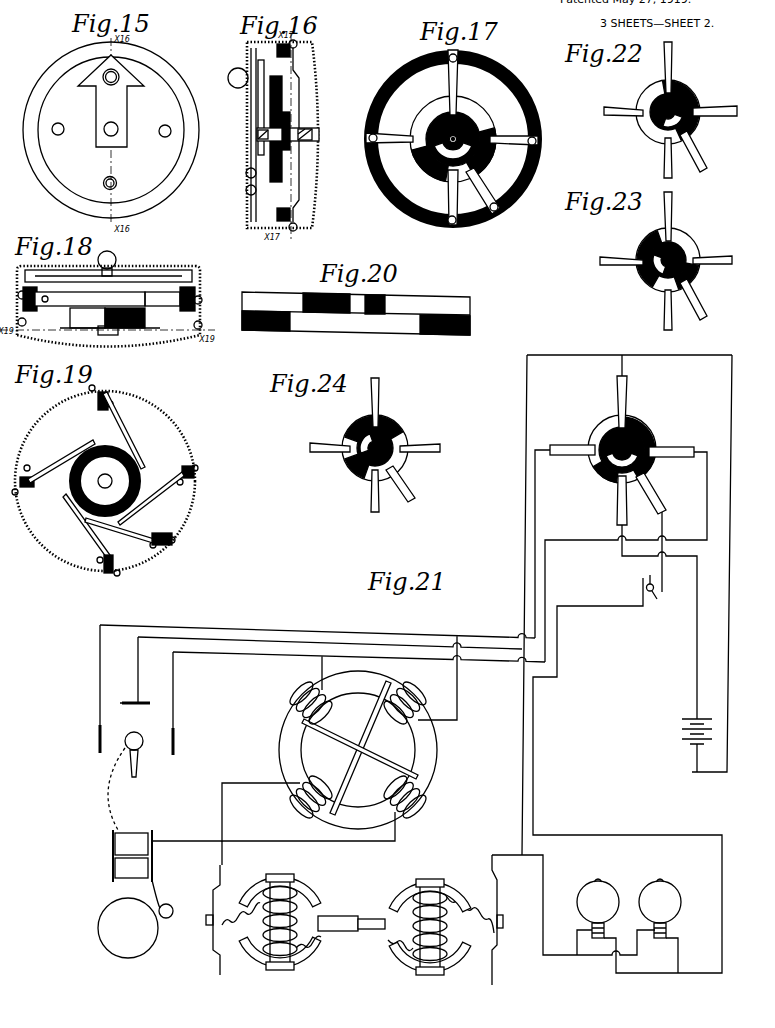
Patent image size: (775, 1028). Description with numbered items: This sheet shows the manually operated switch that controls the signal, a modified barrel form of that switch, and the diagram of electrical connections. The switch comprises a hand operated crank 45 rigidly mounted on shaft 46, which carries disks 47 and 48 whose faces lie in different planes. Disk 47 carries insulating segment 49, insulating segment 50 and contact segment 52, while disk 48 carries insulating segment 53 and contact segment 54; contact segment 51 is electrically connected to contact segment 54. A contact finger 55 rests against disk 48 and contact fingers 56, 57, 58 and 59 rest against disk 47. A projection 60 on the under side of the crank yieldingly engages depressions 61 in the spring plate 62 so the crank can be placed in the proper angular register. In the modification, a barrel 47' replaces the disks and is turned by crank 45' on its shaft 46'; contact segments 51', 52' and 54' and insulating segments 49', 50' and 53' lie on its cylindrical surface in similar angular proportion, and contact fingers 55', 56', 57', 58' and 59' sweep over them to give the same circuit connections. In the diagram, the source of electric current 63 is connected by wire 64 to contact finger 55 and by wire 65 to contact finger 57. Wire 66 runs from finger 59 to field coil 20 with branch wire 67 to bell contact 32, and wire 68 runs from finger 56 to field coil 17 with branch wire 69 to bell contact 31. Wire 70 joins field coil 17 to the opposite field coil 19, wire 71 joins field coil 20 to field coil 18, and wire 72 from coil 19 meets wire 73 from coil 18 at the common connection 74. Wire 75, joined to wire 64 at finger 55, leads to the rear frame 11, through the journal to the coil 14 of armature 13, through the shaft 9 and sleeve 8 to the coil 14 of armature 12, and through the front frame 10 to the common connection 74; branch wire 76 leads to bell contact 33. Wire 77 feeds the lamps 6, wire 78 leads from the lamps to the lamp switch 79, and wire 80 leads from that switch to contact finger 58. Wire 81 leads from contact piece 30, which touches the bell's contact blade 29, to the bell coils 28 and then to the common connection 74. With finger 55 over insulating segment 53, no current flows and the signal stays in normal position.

In FIG. 21, the lamps 6 is at (629, 908).
In FIG. 21, the sleeve 8 is at (345, 916).
In FIG. 21, the shaft 9 is at (370, 929).
In FIG. 21, the front frame 10 is at (210, 908).
In FIG. 21, the rear frame 11 is at (497, 908).
In FIG. 21, the armature 12 is at (296, 905).
In FIG. 21, the armature 13 is at (447, 936).
In FIG. 21, the coil 14 is at (258, 928).
In FIG. 21, the field coil 17 is at (418, 688).
In FIG. 21, the field coil 18 is at (418, 814).
In FIG. 21, the field coil 19 is at (297, 817).
In FIG. 21, the field coil 20 is at (300, 689).
In FIG. 21, the coils of the bell 28 is at (115, 857).
In FIG. 21, the contact blade of bell 29 is at (138, 762).
In FIG. 21, the contact piece 30 is at (125, 741).
In FIG. 21, the bell contact 31 is at (100, 738).
In FIG. 21, the bell contact 32 is at (173, 738).
In FIG. 21, the bell contact 33 is at (138, 695).
In FIG. 15, the hand operated crank 45 is at (114, 101).
In FIG. 16, the hand operated crank 45 is at (246, 107).
In FIG. 18, the crank 45' is at (108, 266).
In FIG. 16, the shaft 46 is at (288, 145).
In FIG. 18, the shaft 46' is at (94, 332).
In FIG. 16, the disk 47 is at (277, 129).
In FIG. 17, the disk 47 is at (499, 115).
In FIG. 18, the barrel 47' is at (162, 308).
In FIG. 19, the barrel 47' is at (121, 481).
In FIG. 16, the disk 48 is at (290, 150).
In FIG. 17, the disk 48 is at (475, 110).
In FIG. 17, the insulating segment 49 is at (487, 152).
In FIG. 20, the insulating segment 49' is at (326, 296).
In FIG. 17, the insulating segment 50 is at (430, 171).
In FIG. 20, the insulating segment 50' is at (376, 297).
In FIG. 17, the contact segment 51 is at (466, 188).
In FIG. 22, the contact segment 51 is at (708, 99).
In FIG. 23, the contact segment 51 is at (623, 272).
In FIG. 24, the contact segment 51 is at (374, 420).
In FIG. 21, the contact segment 51 is at (635, 494).
In FIG. 20, the contact segment 51' is at (356, 303).
In FIG. 17, the contact segment 52 is at (417, 103).
In FIG. 22, the contact segment 52 is at (650, 130).
In FIG. 23, the contact segment 52 is at (686, 276).
In FIG. 24, the contact segment 52 is at (357, 466).
In FIG. 21, the contact segment 52 is at (601, 427).
In FIG. 18, the contact segment 52' is at (109, 299).
In FIG. 20, the contact segment 52' is at (347, 305).
In FIG. 17, the insulating segment 53 is at (473, 94).
In FIG. 21, the insulating segment 53 is at (642, 443).
In FIG. 18, the insulating segment 53' is at (110, 333).
In FIG. 20, the insulating segment 53' is at (356, 332).
In FIG. 17, the contact segment 54 is at (453, 141).
In FIG. 22, the contact segment 54 is at (674, 110).
In FIG. 23, the contact segment 54 is at (661, 259).
In FIG. 24, the contact segment 54 is at (375, 446).
In FIG. 21, the contact segment 54 is at (619, 455).
In FIG. 18, the contact segment 54' is at (107, 318).
In FIG. 20, the contact segment 54' is at (351, 322).
In FIG. 16, the contact finger 55 is at (304, 135).
In FIG. 17, the contact finger 55 is at (444, 82).
In FIG. 22, the contact finger 55 is at (678, 67).
In FIG. 23, the contact finger 55 is at (677, 216).
In FIG. 24, the contact finger 55 is at (384, 402).
In FIG. 21, the contact finger 55 is at (612, 402).
In FIG. 19, the contact finger 55' is at (127, 430).
In FIG. 17, the contact finger 56 is at (389, 145).
In FIG. 22, the contact finger 56 is at (623, 103).
In FIG. 23, the contact finger 56 is at (621, 253).
In FIG. 24, the contact finger 56 is at (330, 456).
In FIG. 21, the contact finger 56 is at (572, 441).
In FIG. 19, the contact finger 56' is at (57, 463).
In FIG. 16, the contact finger 57 is at (274, 207).
In FIG. 17, the contact finger 57 is at (444, 197).
In FIG. 22, the contact finger 57 is at (659, 158).
In FIG. 23, the contact finger 57 is at (659, 310).
In FIG. 24, the contact finger 57 is at (364, 491).
In FIG. 21, the contact finger 57 is at (613, 500).
In FIG. 19, the contact finger 57' is at (86, 533).
In FIG. 17, the contact finger 58 is at (483, 191).
In FIG. 22, the contact finger 58 is at (696, 151).
In FIG. 23, the contact finger 58 is at (696, 299).
In FIG. 24, the contact finger 58 is at (404, 484).
In FIG. 21, the contact finger 58 is at (652, 493).
In FIG. 19, the contact finger 58' is at (128, 533).
In FIG. 17, the contact finger 59 is at (514, 148).
In FIG. 22, the contact finger 59 is at (715, 118).
In FIG. 23, the contact finger 59 is at (712, 267).
In FIG. 24, the contact finger 59 is at (420, 440).
In FIG. 21, the contact finger 59 is at (671, 443).
In FIG. 19, the contact finger 59' is at (156, 495).
In FIG. 16, the projection 60 is at (284, 57).
In FIG. 15, the depressions 61 is at (64, 133).
In FIG. 16, the depressions 61 is at (250, 194).
In FIG. 16, the spring plate 62 is at (248, 175).
In FIG. 21, the source of electric current 63 is at (682, 732).
In FIG. 21, the wire 64 is at (686, 355).
In FIG. 21, the wire 65 is at (697, 650).
In FIG. 21, the wire 66 is at (707, 497).
In FIG. 21, the branch wire 67 is at (252, 655).
In FIG. 21, the wire 68 is at (535, 497).
In FIG. 21, the branch wire 69 is at (327, 634).
In FIG. 21, the wire 70 is at (366, 728).
In FIG. 21, the wire 71 is at (336, 727).
In FIG. 21, the wire 72 is at (255, 786).
In FIG. 21, the wire 73 is at (330, 841).
In FIG. 21, the common connection 74 is at (222, 841).
In FIG. 21, the wire 75 is at (576, 355).
In FIG. 21, the branch wire 76 is at (296, 643).
In FIG. 21, the wire 77 is at (543, 880).
In FIG. 21, the wire 78 is at (533, 748).
In FIG. 21, the lamp switch 79 is at (657, 600).
In FIG. 21, the wire 80 is at (662, 572).
In FIG. 21, the wire 81 is at (111, 798).